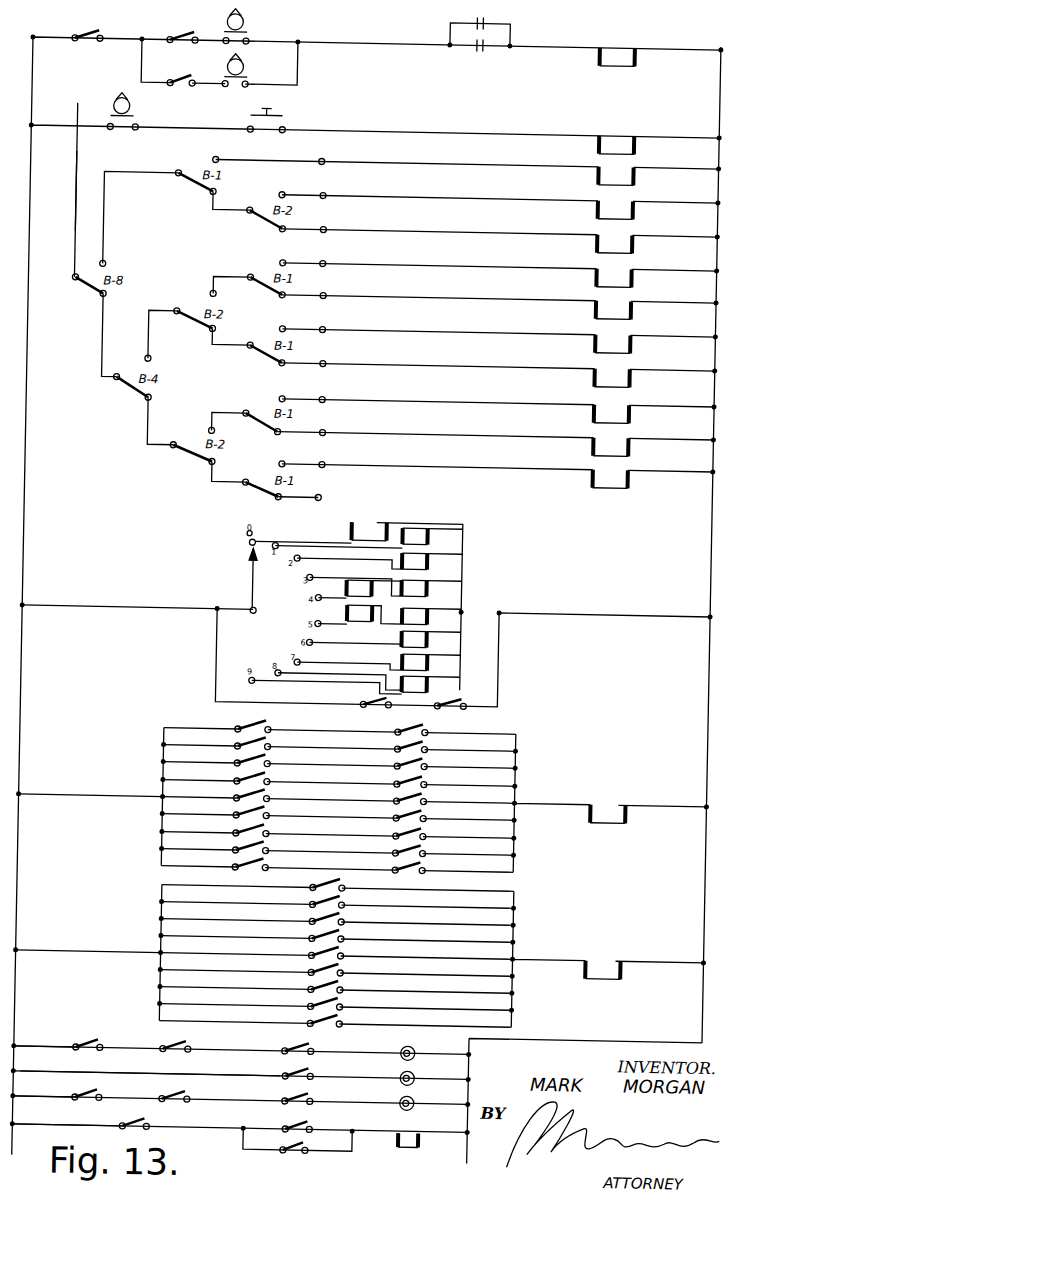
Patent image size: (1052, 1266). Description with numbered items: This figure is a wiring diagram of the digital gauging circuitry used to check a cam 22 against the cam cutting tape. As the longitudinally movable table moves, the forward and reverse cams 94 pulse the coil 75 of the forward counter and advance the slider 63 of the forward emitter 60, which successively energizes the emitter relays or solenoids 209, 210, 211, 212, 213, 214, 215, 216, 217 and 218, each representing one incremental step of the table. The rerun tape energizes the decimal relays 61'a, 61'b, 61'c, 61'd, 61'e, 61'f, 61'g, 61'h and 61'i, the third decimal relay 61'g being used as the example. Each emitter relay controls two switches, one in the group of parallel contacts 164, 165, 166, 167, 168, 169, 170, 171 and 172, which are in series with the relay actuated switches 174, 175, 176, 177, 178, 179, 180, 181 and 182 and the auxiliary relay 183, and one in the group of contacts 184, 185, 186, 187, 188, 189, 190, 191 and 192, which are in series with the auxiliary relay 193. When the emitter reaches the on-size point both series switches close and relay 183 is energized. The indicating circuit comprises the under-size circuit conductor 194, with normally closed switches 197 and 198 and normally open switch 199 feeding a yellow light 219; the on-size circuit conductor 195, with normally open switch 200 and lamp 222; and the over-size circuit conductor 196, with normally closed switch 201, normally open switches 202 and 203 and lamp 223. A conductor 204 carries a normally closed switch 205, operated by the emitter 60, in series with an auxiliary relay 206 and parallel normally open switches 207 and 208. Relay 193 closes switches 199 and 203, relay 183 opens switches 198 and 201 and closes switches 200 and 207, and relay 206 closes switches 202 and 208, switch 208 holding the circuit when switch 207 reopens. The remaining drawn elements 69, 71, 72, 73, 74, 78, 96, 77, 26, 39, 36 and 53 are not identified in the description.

The switch 69 is at (96, 30).
The switch 71 is at (189, 29).
The contacts 72 is at (250, 36).
The capacitor 73 is at (480, 31).
The capacitor 74 is at (485, 45).
The coil of forward counter 75 is at (636, 51).
The switch 78 is at (192, 73).
The forward and reverse cams 94 is at (243, 18).
The lamp 96 is at (244, 61).
The contacts 77 is at (246, 84).
The cam 22 is at (131, 106).
The contacts 26 is at (114, 129).
The push button switch 39 is at (286, 129).
The relay coil 36 is at (637, 144).
The selector switch bank 53 is at (79, 239).
The decimal relay 61'a is at (637, 217).
The decimal relay 61'b is at (637, 251).
The decimal relay 61'c is at (635, 285).
The decimal relay 61'd is at (637, 317).
The decimal relay 61'e is at (635, 351).
The decimal relay 61'f is at (632, 385).
The third decimal relay 61'g is at (634, 421).
The decimal relay 61'h is at (633, 454).
The decimal relay 61'i is at (628, 486).
The forward emitter 60 is at (263, 609).
The slider of emitter 63 is at (259, 575).
The emitter relay 209 is at (370, 519).
The emitter relay 210 is at (437, 529).
The emitter relay 211 is at (437, 554).
The emitter relay 212 is at (437, 581).
The emitter relay 213 is at (357, 583).
The emitter relay 214 is at (358, 608).
The emitter relay 215 is at (438, 609).
The emitter relay 216 is at (438, 632).
The emitter relay 217 is at (439, 655).
The emitter relay 218 is at (439, 677).
The parallel contact 164 is at (276, 719).
The parallel contact 165 is at (276, 736).
The parallel contact 166 is at (276, 753).
The parallel contact 167 is at (276, 771).
The parallel contact 168 is at (276, 788).
The parallel contact 169 is at (276, 805).
The parallel contact 170 is at (276, 823).
The parallel contact 171 is at (276, 840).
The parallel contact 172 is at (276, 857).
The relay actuated switch 174 is at (436, 719).
The relay actuated switch 175 is at (436, 736).
The relay actuated switch 176 is at (436, 753).
The relay actuated switch 177 is at (436, 771).
The relay actuated switch 178 is at (436, 788).
The relay actuated switch 179 is at (436, 805).
The relay actuated switch 180 is at (436, 823).
The relay actuated switch 181 is at (436, 840).
The relay actuated switch 182 is at (436, 857).
The auxiliary relay 183 is at (614, 814).
The contact 184 is at (359, 884).
The contact 185 is at (359, 901).
The contact 186 is at (359, 918).
The contact 187 is at (359, 935).
The contact 188 is at (359, 952).
The contact 189 is at (359, 969).
The contact 190 is at (359, 986).
The contact 191 is at (359, 1003).
The contact 192 is at (359, 1020).
The auxiliary relay 193 is at (616, 970).
The under-size circuit conductor 194 is at (64, 1044).
The on-size circuit conductor 195 is at (65, 1069).
The over-size circuit conductor 196 is at (50, 1094).
The normally closed switch 197 is at (108, 1040).
The normally closed switch 198 is at (324, 1042).
The normally open switch 199 is at (203, 1038).
The normally open switch 200 is at (330, 1067).
The normally closed switch 201 is at (330, 1094).
The normally open switch 202 is at (214, 1095).
The normally open switch 203 is at (119, 1092).
The conductor 204 is at (48, 1123).
The normally closed switch 205 is at (172, 1121).
The auxiliary relay 206 is at (430, 1140).
The normally open switch 207 is at (331, 1119).
The normally open switch 208 is at (328, 1147).
The yellow light 219 is at (430, 1040).
The lamp 222 is at (432, 1067).
The lamp 223 is at (432, 1092).